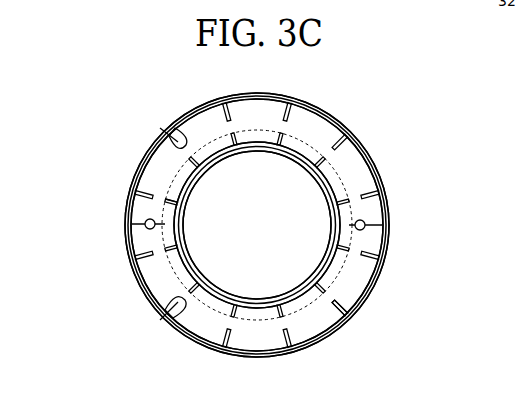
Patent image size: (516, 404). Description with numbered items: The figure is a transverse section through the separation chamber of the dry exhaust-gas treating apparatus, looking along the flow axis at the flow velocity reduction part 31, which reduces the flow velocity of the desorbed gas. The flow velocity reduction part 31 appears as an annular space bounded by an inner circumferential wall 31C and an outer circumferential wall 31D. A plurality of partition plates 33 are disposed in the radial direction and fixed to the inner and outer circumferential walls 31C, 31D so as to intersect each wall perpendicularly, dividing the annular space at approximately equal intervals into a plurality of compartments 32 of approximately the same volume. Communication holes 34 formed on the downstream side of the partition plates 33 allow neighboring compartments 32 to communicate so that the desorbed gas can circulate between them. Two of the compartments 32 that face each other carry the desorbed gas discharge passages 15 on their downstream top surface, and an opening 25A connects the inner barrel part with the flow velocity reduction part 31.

The flow velocity reduction part 31 is at (372, 127).
The inner circumferential wall 31C is at (332, 223).
The outer circumferential wall 31D is at (380, 176).
The compartments 32 is at (316, 122).
The partition plates 33 is at (166, 133).
The communication holes 34 is at (182, 124).
The desorbed gas discharge passages 15 is at (145, 222).
The opening 25A is at (370, 297).